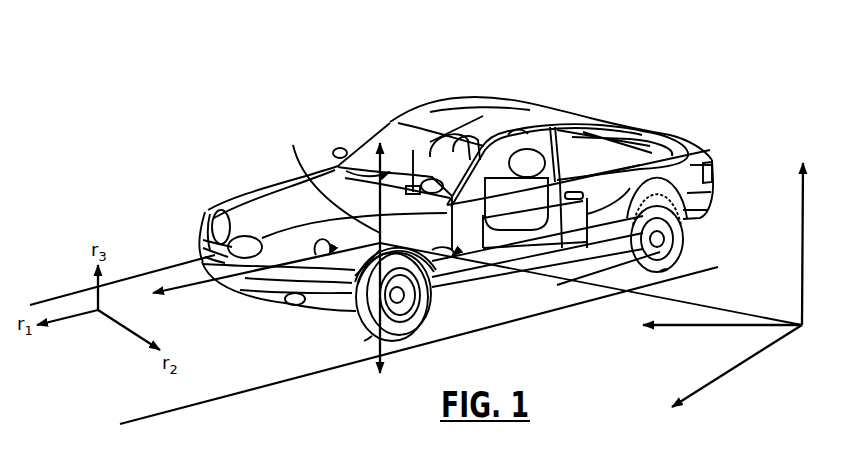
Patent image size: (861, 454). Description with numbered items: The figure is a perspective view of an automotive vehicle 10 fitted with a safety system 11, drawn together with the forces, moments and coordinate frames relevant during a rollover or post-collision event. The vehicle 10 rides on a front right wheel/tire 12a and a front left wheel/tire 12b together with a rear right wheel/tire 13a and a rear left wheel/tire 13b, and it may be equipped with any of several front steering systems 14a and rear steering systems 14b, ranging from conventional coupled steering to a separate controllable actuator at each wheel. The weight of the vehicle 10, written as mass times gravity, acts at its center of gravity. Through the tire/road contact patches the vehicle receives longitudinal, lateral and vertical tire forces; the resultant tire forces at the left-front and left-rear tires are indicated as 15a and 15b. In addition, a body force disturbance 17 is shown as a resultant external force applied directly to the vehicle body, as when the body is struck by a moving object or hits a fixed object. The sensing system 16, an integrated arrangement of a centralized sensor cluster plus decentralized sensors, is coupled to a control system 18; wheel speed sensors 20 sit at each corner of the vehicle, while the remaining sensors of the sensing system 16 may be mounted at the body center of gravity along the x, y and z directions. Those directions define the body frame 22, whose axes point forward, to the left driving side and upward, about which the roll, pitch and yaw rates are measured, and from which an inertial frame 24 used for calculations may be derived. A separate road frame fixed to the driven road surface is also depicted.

The automotive vehicle 10 is at (468, 110).
The safety system 11 is at (650, 127).
The front right wheel/tire 12a is at (214, 207).
The front left wheel/tire 12b is at (425, 303).
The rear right wheel/tire 13a is at (505, 148).
The rear left wheel/tire 13b is at (688, 243).
The front steering system 14a is at (357, 273).
The rear steering system 14b is at (707, 163).
The resultant tire force at left-front tire 15a is at (366, 340).
The resultant tire force at left-rear tire 15b is at (667, 279).
The sensing system 16 is at (413, 148).
The body force disturbance 17 is at (457, 96).
The control system 18 is at (589, 170).
The wheel speed sensors 20 is at (495, 293).
The body frame 22 is at (187, 283).
The inertial frame 24 is at (803, 330).